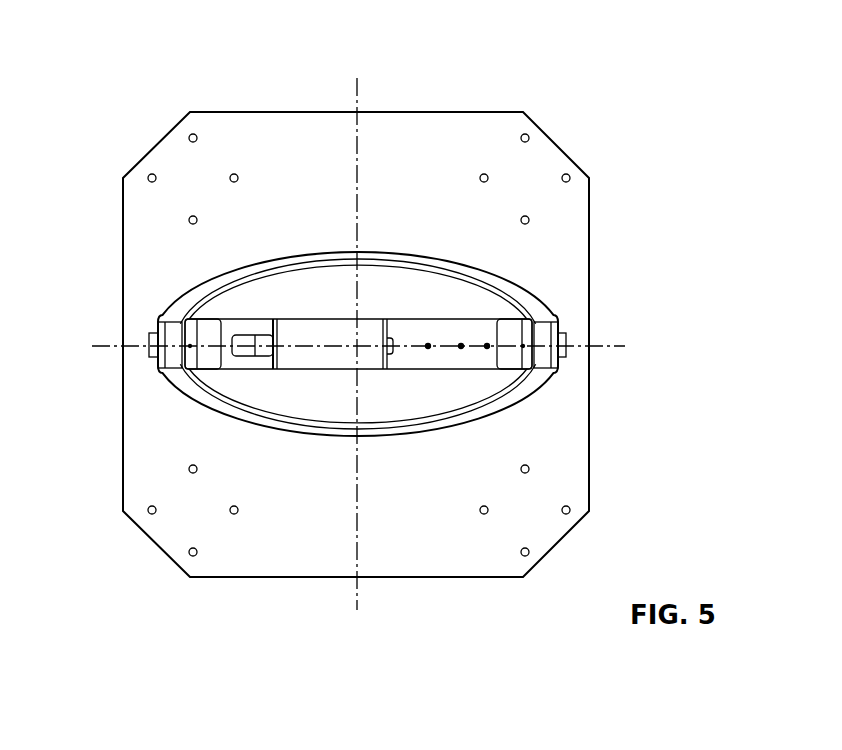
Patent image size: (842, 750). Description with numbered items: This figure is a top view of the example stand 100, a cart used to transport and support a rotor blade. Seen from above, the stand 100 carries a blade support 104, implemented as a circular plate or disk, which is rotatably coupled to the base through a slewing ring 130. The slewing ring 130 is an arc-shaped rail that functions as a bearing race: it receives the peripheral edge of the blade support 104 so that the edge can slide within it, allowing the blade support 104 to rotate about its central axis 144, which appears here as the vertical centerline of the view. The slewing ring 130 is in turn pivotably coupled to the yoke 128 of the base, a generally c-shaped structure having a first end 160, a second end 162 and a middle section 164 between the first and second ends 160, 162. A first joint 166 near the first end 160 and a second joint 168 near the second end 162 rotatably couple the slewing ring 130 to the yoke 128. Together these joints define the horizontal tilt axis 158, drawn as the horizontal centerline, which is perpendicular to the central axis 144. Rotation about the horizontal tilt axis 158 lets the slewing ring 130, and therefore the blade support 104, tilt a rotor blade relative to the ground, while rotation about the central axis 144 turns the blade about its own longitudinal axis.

The stand 100 is at (157, 44).
The central axis 144 is at (355, 87).
The blade support 104 is at (452, 332).
The slewing ring 130 is at (508, 333).
The yoke 128 is at (178, 295).
The horizontal tilt axis 158 is at (105, 342).
The second joint 168 is at (152, 347).
The second end 162 is at (172, 358).
The first joint 166 is at (565, 350).
The first end 160 is at (557, 360).
The middle section 164 is at (457, 418).